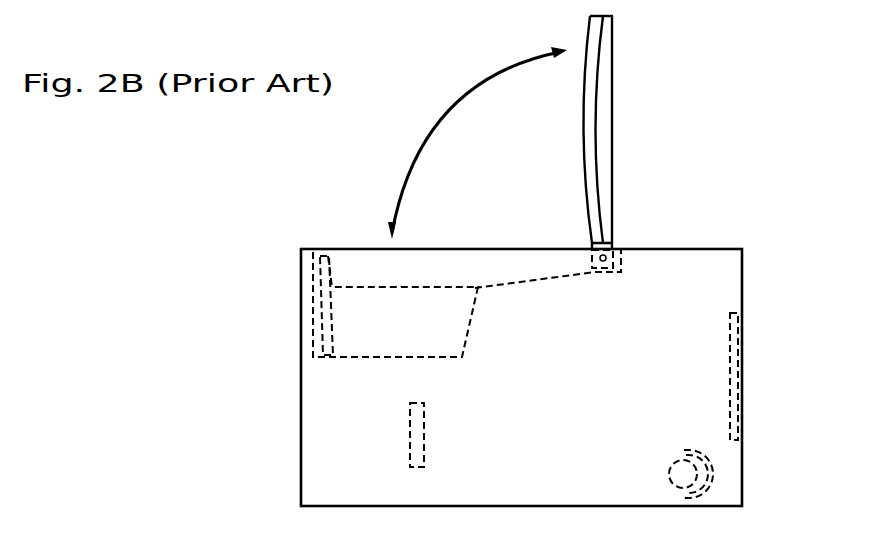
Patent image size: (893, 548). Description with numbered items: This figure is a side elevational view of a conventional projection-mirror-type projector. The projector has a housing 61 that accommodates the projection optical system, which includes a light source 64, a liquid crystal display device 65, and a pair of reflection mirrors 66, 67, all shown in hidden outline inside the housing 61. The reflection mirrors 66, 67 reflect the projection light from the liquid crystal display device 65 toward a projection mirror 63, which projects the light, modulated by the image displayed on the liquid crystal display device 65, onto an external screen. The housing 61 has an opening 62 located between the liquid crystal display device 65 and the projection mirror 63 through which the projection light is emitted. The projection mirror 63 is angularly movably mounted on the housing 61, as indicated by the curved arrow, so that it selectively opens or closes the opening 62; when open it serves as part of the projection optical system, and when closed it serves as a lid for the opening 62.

The housing 61 is at (741, 264).
The opening 62 is at (523, 262).
The projection mirror 63 is at (592, 72).
The light source 64 is at (708, 473).
The liquid crystal display device 65 is at (410, 435).
The reflection mirror 66 is at (735, 327).
The reflection mirror 67 is at (327, 310).